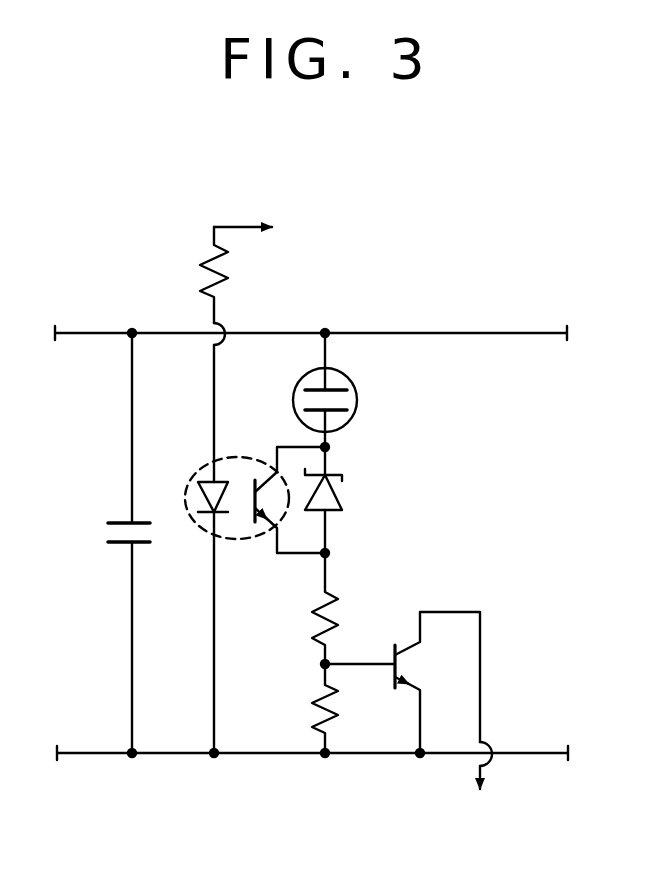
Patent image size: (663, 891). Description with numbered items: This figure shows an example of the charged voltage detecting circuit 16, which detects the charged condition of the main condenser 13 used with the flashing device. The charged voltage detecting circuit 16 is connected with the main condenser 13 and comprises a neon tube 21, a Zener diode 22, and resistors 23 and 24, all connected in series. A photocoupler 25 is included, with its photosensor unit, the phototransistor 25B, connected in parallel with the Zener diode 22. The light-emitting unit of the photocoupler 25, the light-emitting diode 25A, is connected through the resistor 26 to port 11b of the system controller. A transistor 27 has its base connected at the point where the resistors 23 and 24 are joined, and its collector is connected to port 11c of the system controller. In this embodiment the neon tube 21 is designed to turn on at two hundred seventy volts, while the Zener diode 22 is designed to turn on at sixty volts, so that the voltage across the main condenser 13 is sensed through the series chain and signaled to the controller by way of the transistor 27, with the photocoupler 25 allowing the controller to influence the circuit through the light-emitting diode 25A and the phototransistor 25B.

The port 11b is at (281, 228).
The port 11c is at (490, 792).
The main condenser 13 is at (117, 521).
The charged voltage detecting circuit 16 is at (210, 784).
The neon tube 21 is at (357, 396).
The Zener diode 22 is at (342, 497).
The resistor 23 is at (312, 598).
The resistor 24 is at (312, 697).
The photocoupler 25 is at (239, 551).
The light-emitting diode 25A is at (203, 523).
The phototransistor 25B is at (258, 462).
The resistor 26 is at (200, 280).
The transistor 27 is at (408, 640).